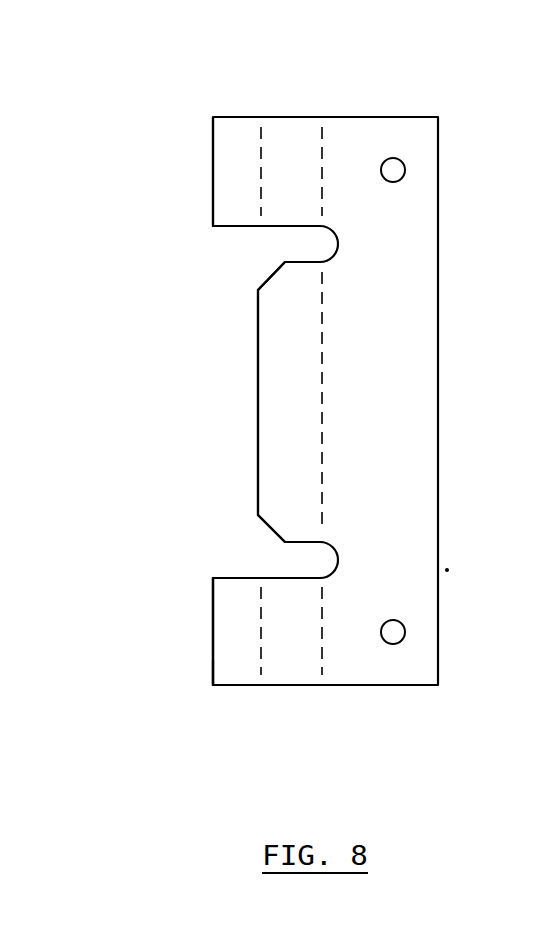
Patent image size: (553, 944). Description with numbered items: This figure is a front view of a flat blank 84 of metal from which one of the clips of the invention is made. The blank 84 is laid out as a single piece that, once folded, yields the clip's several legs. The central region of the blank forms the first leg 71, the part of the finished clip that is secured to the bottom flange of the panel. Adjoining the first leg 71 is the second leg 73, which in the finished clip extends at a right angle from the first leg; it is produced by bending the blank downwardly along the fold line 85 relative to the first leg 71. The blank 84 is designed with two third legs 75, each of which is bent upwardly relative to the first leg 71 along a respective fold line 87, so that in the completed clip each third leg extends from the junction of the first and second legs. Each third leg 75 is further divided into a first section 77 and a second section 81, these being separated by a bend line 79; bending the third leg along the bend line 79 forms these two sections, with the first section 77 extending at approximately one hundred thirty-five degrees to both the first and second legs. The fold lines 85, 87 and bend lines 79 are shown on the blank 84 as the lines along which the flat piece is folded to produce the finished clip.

The first leg 71 is at (423, 518).
The second leg 73 is at (275, 365).
The third leg 75 is at (213, 177).
The first section 77 is at (290, 670).
The bend line 79 is at (262, 147).
The second section 81 is at (227, 675).
The blank 84 is at (213, 630).
The fold line 85 is at (322, 387).
The fold line 87 is at (326, 155).